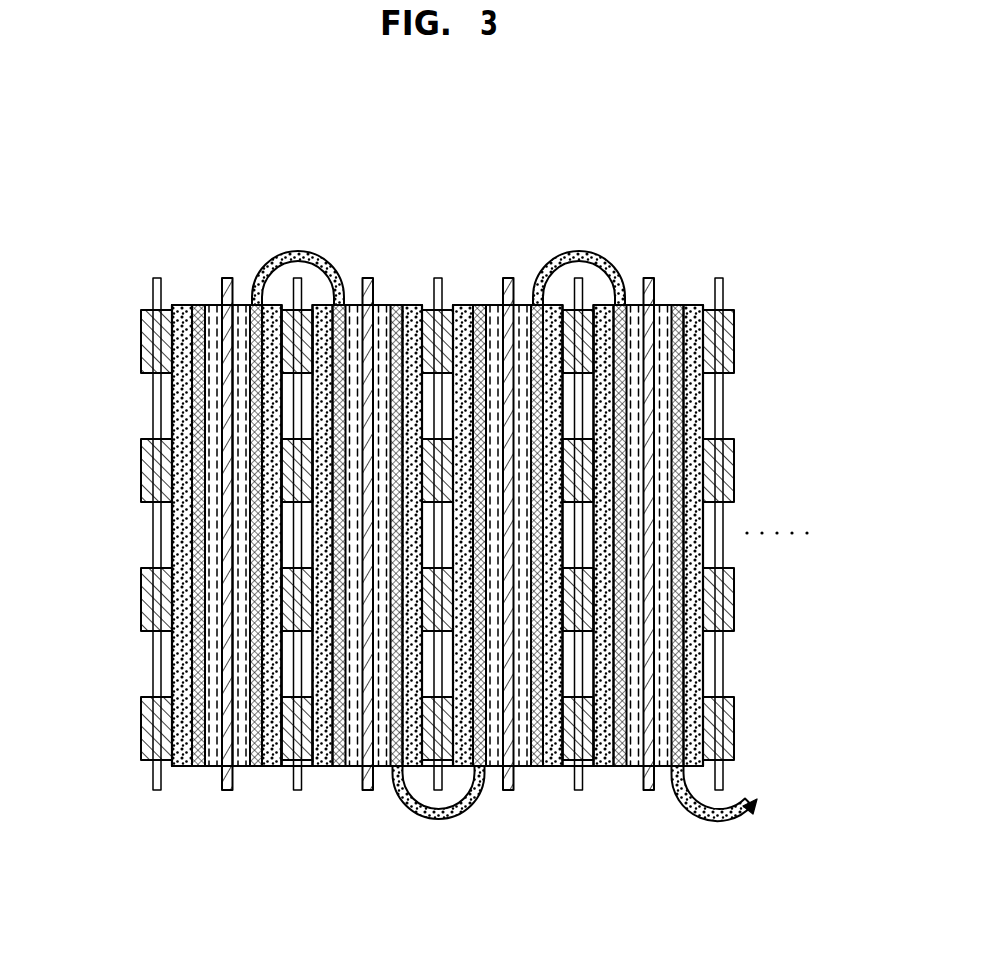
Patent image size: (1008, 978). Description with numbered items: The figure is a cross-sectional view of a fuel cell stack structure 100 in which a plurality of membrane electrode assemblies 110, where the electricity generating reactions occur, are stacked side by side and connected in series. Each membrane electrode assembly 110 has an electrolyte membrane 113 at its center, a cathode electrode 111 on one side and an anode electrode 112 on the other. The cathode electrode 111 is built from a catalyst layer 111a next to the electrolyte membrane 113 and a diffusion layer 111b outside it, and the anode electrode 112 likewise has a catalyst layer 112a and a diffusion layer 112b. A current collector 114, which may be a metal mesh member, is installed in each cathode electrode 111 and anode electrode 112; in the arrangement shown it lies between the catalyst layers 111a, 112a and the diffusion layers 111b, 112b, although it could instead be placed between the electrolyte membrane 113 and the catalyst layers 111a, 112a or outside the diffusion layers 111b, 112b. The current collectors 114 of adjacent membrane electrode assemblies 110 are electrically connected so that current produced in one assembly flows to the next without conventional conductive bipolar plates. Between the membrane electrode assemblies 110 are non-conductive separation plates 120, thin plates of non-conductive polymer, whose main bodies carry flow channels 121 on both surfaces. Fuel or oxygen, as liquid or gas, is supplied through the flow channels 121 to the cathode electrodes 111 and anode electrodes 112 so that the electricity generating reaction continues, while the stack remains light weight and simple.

The fuel cell stack structure 100 is at (743, 229).
The membrane electrode assembly 110 is at (226, 877).
The cathode electrode 111 is at (218, 842).
The catalyst layer 111a is at (213, 767).
The diffusion layer 111b is at (172, 767).
The anode electrode 112 is at (340, 842).
The catalyst layer 112a is at (242, 767).
The diffusion layer 112b is at (275, 767).
The electrolyte membrane 113 is at (227, 278).
The current collector 114 is at (197, 306).
The non-conductive separation plate 120 is at (155, 288).
The flow channel 121 is at (170, 660).